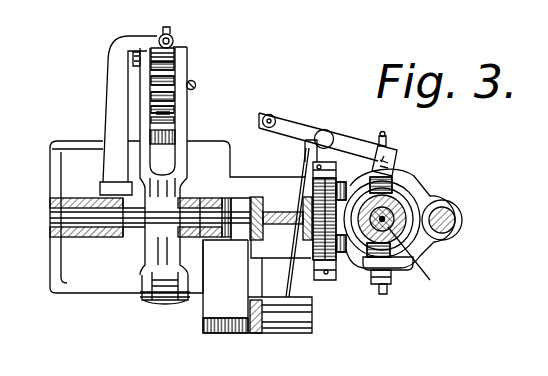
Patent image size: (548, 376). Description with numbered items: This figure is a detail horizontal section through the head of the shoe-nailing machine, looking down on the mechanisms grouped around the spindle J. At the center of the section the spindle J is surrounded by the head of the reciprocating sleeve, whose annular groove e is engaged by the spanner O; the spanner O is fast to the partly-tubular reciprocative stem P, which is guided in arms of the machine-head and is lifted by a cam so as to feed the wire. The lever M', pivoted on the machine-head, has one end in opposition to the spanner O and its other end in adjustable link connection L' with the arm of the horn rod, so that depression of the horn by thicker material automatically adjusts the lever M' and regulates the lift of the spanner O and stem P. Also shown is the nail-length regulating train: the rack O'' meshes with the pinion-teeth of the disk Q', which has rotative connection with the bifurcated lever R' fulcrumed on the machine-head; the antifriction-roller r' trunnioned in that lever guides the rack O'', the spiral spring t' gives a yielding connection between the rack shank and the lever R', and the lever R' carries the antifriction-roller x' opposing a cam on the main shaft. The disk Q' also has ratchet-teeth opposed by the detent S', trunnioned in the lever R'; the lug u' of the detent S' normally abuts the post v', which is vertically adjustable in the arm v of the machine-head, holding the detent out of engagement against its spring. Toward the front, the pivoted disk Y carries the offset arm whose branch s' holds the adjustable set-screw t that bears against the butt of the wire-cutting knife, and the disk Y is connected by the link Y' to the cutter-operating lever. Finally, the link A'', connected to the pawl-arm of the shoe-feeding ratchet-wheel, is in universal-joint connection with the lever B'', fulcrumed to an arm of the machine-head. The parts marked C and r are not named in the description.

The base casing C is at (180, 219).
The arm of the machine-head v is at (133, 115).
The post v' is at (169, 22).
The lug u' is at (182, 35).
The detent S' is at (182, 49).
The disk Q' is at (125, 92).
The spiral spring t' is at (205, 78).
The rack O'' is at (190, 102).
The antifriction-roller r' is at (182, 127).
The lever R' is at (150, 161).
The antifriction-roller x' is at (165, 305).
The lever B'' is at (257, 303).
The link A'' is at (281, 222).
The disk Y is at (309, 219).
The link Y' is at (301, 244).
The adjustable link connection L' is at (321, 125).
The lever M' is at (347, 136).
The branch s' is at (373, 224).
The set-screw t is at (393, 220).
The spanner O is at (399, 214).
The annular groove e is at (402, 198).
The eccentric strap r is at (365, 244).
The stem P is at (455, 221).
The spindle J is at (413, 263).